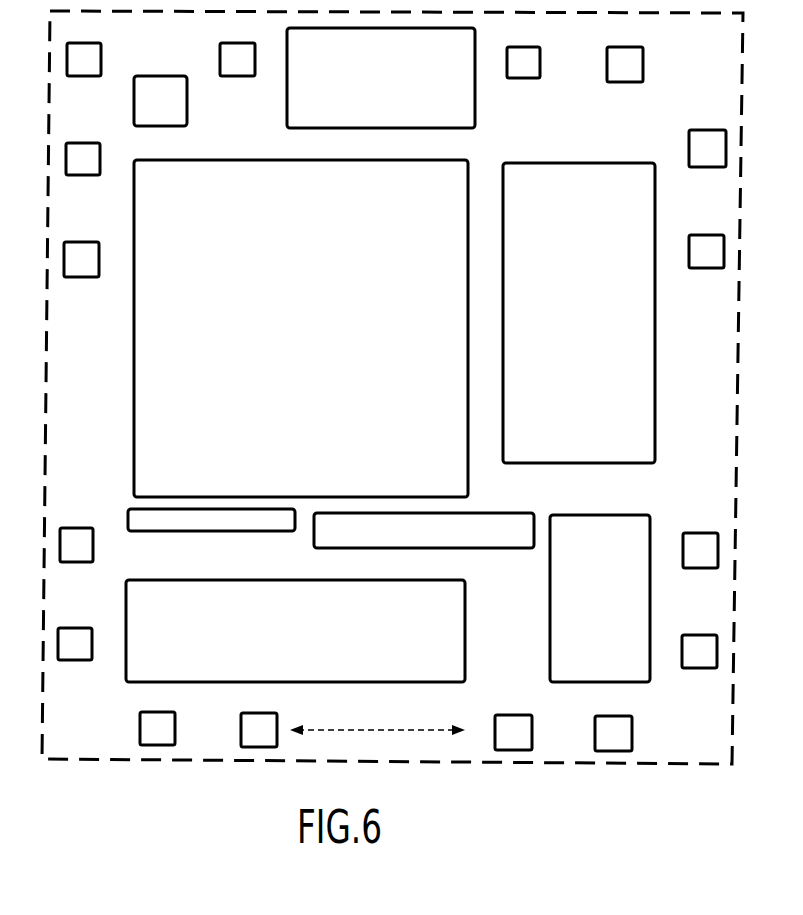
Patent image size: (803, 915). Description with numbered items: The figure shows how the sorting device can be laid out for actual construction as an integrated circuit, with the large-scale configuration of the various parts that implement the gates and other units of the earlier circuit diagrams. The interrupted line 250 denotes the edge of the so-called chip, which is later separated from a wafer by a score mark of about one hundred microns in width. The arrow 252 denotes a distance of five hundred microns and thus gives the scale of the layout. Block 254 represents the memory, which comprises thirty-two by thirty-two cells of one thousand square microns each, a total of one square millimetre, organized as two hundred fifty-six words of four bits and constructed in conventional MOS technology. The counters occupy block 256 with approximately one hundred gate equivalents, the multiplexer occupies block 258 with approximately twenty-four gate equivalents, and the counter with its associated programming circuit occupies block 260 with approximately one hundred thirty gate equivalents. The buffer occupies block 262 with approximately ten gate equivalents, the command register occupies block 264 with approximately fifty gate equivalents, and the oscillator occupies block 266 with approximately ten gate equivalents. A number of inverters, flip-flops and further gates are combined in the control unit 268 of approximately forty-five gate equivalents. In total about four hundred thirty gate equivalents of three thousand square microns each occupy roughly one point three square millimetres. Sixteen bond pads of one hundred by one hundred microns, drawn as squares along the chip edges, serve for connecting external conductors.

The integrated circuit chip 250 is at (70, 761).
The arrow 252 is at (381, 726).
The memory 254 is at (468, 476).
The counters block 256 is at (465, 672).
The multiplexer block 258 is at (314, 533).
The counter and programming circuit block 260 is at (621, 464).
The buffer block 262 is at (238, 532).
The command register block 264 is at (550, 632).
The oscillator block 266 is at (188, 105).
The control unit 268 is at (476, 105).